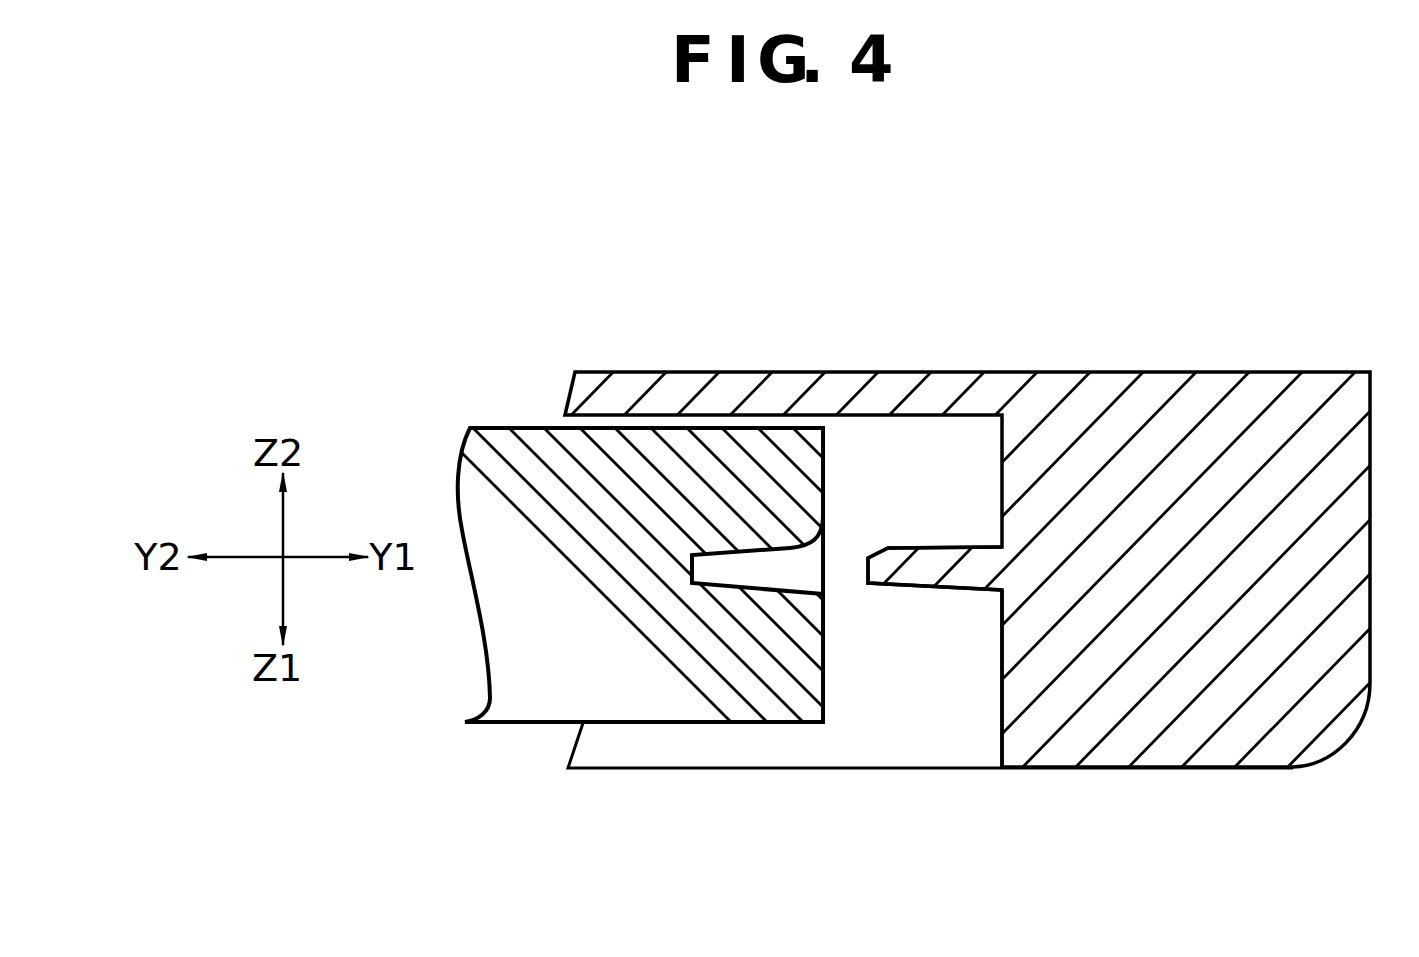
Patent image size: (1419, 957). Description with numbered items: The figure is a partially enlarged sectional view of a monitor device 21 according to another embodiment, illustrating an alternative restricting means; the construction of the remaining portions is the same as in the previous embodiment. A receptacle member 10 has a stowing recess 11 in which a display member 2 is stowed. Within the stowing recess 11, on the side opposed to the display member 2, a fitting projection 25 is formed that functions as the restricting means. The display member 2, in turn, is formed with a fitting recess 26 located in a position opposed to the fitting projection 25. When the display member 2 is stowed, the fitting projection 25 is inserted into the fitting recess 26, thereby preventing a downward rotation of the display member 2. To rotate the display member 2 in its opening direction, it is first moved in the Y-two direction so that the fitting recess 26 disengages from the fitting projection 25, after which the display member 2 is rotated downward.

The display member 2 is at (513, 695).
The receptacle member 10 is at (1187, 727).
The stowing recess 11 is at (1002, 708).
The monitor device 21 is at (600, 778).
The fitting projection 25 is at (930, 557).
The fitting recess 26 is at (765, 596).